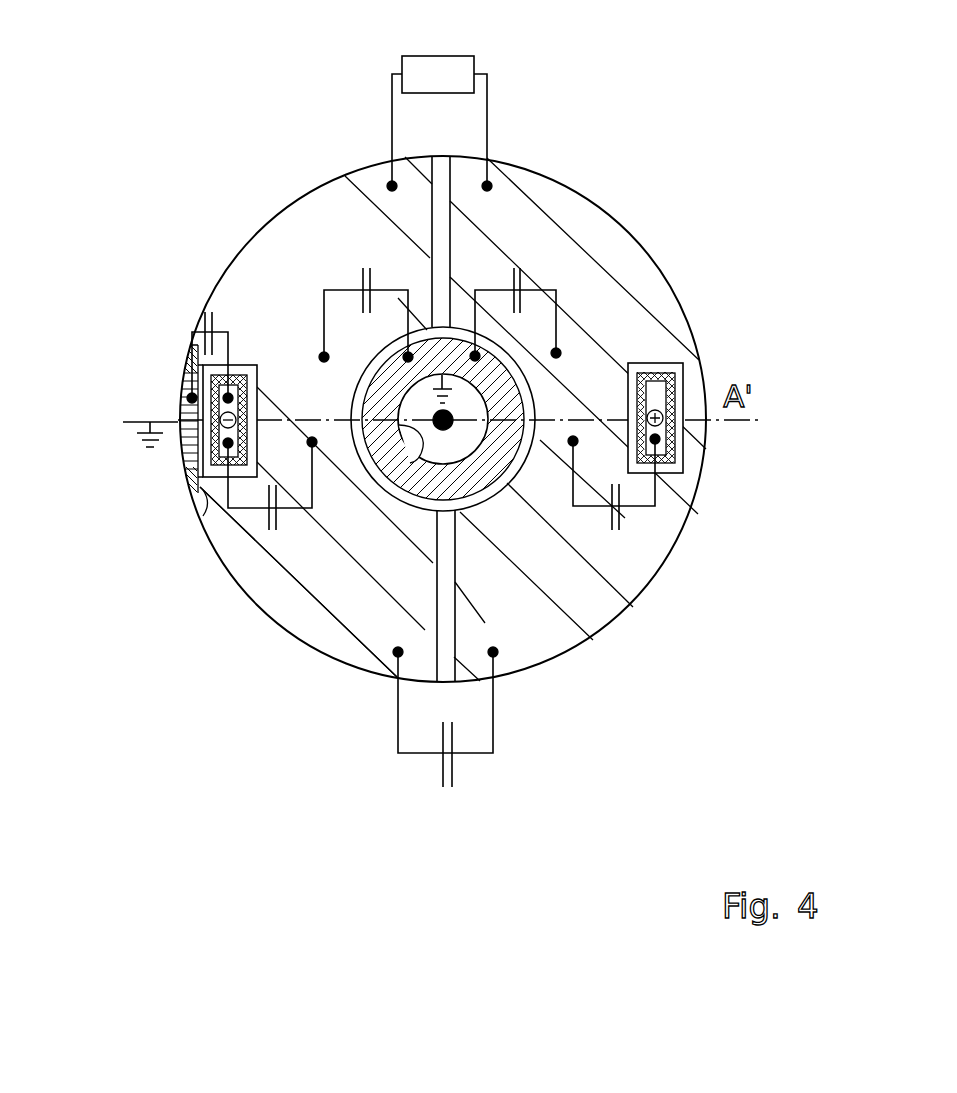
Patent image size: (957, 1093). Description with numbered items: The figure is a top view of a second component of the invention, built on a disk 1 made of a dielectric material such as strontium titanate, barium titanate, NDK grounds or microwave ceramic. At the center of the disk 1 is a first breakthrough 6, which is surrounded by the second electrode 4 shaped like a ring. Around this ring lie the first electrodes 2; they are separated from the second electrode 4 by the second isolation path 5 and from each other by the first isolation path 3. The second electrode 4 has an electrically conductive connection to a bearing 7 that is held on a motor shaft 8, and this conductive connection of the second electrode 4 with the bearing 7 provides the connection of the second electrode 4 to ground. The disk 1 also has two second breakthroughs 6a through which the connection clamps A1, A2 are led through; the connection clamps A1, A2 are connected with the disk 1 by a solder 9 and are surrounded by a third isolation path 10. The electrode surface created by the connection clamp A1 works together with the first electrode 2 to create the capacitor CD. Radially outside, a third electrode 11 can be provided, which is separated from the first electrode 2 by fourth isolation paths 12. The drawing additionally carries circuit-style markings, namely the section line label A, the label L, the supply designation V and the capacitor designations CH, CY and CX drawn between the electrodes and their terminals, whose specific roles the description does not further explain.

The disk 1 is at (440, 218).
The first electrodes 2 is at (558, 622).
The first isolation path 3 is at (443, 622).
The second electrode 4 is at (552, 375).
The second isolation path 5 is at (507, 483).
The first breakthrough 6 is at (405, 472).
The second breakthroughs 6a is at (183, 377).
The bearing 7 is at (419, 397).
The motor shaft 8 is at (432, 412).
The solder 9 is at (207, 437).
The third isolation path 10 is at (324, 357).
The third electrode 11 is at (183, 408).
The fourth isolation paths 12 is at (212, 478).
The connection clamp A1 is at (684, 365).
The connection clamp A2 is at (217, 448).
The section axis point A is at (143, 413).
The inductance L is at (503, 420).
The voltage source V is at (439, 99).
The capacitor CH is at (224, 347).
The capacitor CD is at (448, 497).
The capacitor Cy CY is at (440, 365).
The capacitor Cx CX is at (449, 740).